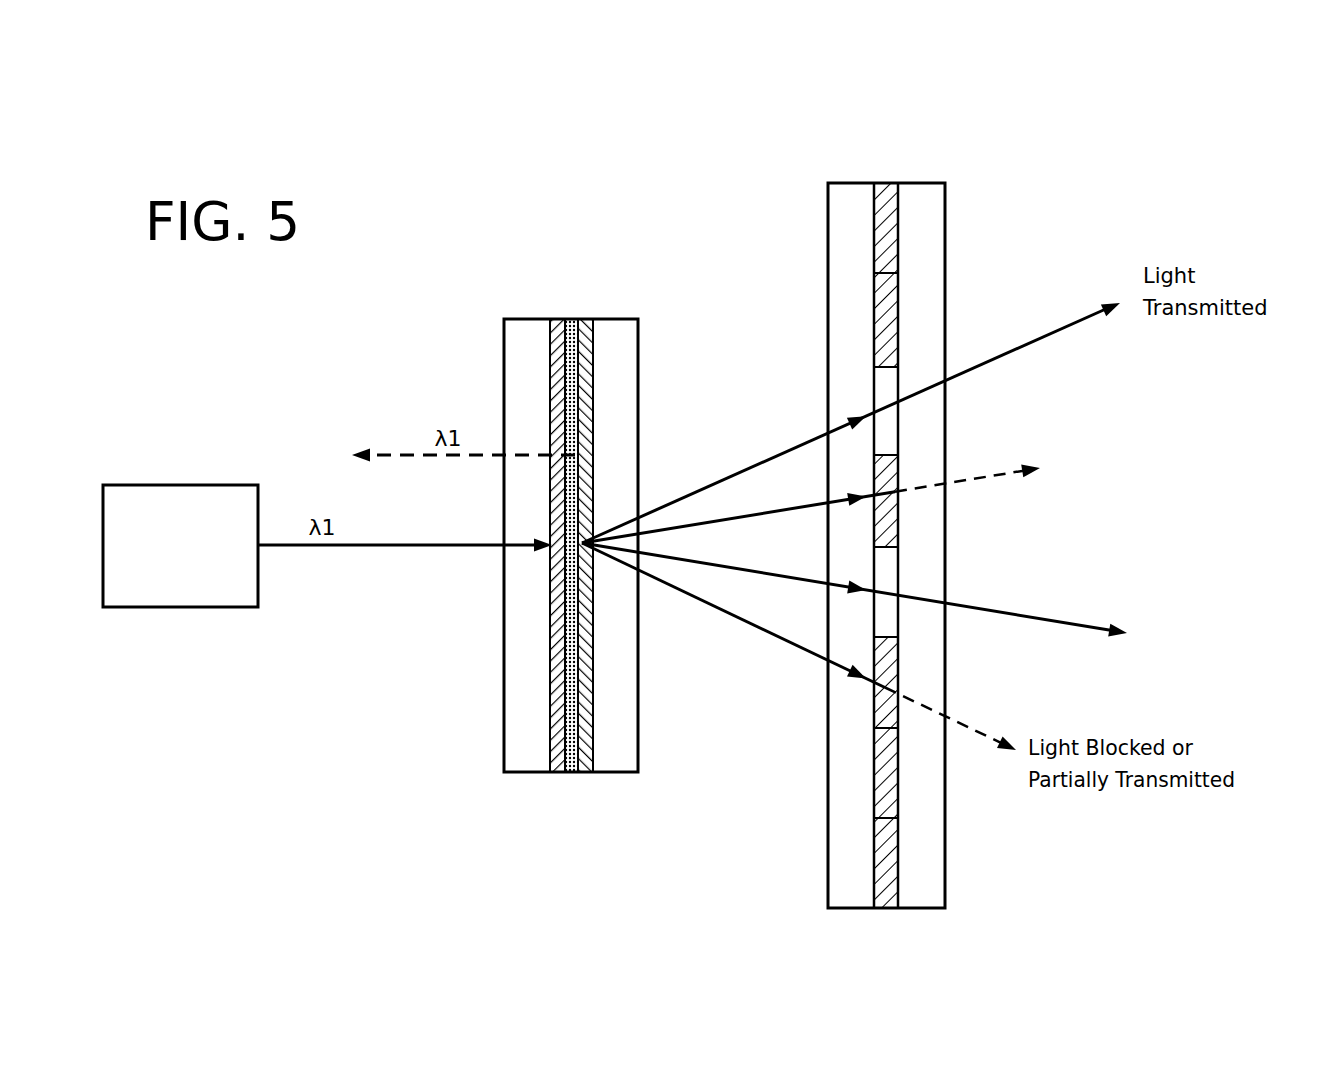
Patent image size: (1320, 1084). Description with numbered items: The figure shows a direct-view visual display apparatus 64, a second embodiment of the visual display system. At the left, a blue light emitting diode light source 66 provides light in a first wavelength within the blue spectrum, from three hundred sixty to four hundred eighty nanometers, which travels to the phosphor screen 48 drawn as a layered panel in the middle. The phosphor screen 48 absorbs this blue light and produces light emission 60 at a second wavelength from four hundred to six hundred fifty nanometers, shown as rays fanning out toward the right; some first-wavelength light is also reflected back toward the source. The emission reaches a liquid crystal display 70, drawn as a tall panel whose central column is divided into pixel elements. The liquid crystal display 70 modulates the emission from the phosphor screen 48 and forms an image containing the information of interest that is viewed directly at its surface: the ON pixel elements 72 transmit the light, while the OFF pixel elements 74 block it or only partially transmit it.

The phosphor screen 48 is at (647, 798).
The light emission 60 is at (708, 483).
The direct-view visual display apparatus 64 is at (672, 203).
The blue light emitting diode light source 66 is at (181, 485).
The liquid crystal display 70 is at (949, 504).
The ON pixel elements 72 is at (900, 423).
The OFF pixel elements 74 is at (900, 220).